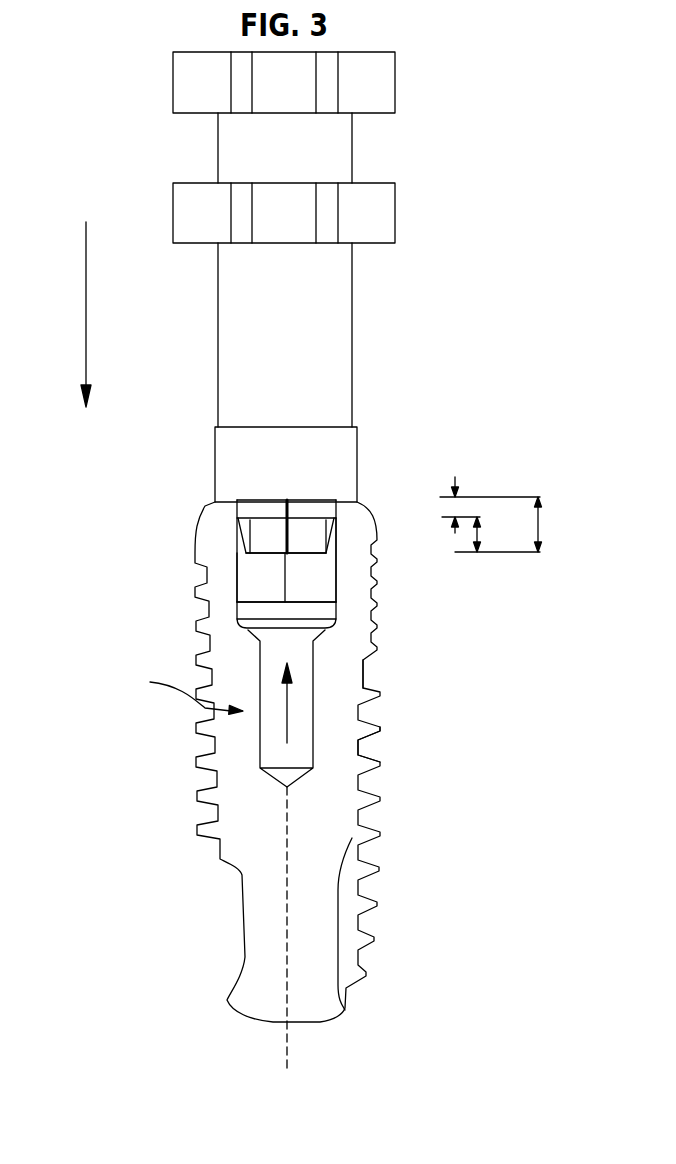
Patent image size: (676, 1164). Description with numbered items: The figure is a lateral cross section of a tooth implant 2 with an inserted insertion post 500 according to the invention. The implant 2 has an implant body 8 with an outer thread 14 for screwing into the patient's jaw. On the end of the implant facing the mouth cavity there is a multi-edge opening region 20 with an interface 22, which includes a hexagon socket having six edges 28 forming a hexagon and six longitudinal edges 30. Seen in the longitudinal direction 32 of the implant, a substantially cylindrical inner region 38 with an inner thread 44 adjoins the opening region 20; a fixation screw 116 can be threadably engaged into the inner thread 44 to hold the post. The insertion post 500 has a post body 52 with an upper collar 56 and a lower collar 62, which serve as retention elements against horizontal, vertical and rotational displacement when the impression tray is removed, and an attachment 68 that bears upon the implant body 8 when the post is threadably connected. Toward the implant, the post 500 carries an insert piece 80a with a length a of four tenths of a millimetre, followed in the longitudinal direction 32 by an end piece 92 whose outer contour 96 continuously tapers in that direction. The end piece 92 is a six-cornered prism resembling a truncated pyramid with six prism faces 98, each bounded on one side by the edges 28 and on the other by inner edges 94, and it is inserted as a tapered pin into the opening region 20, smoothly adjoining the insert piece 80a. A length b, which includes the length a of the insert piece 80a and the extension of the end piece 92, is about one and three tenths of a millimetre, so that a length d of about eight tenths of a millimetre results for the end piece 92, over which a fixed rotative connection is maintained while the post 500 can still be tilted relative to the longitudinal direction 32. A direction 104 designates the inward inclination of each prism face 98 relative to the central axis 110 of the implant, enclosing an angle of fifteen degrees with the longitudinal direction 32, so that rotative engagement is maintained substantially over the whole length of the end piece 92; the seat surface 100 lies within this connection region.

The tooth implant 2 is at (394, 851).
The implant body 8 is at (340, 660).
The outer thread 14 is at (383, 726).
The multi-edge opening region 20 is at (214, 563).
The interface 22 is at (247, 548).
The edges 28 is at (258, 528).
The longitudinal edges 30 is at (237, 586).
The longitudinal direction 32 is at (86, 305).
The cylindrical inner region 38 is at (184, 690).
The inner thread 44 is at (313, 686).
The post body 52 is at (352, 147).
The upper collar 56 is at (395, 78).
The lower collar 62 is at (395, 208).
The attachment 68 is at (215, 437).
The insert piece 80a is at (215, 508).
The end piece 92 is at (215, 526).
The inner edges 94 is at (331, 558).
The outer contour 96 is at (330, 528).
The prism faces 98 is at (258, 530).
The seat surface 100 is at (247, 540).
The direction 104 is at (262, 555).
The central axis 110 is at (290, 890).
The fixing screw 116 is at (287, 731).
The insertion post 500 is at (388, 370).
The length of insert piece a is at (455, 481).
The combined length b is at (540, 524).
The length of end piece d is at (480, 536).